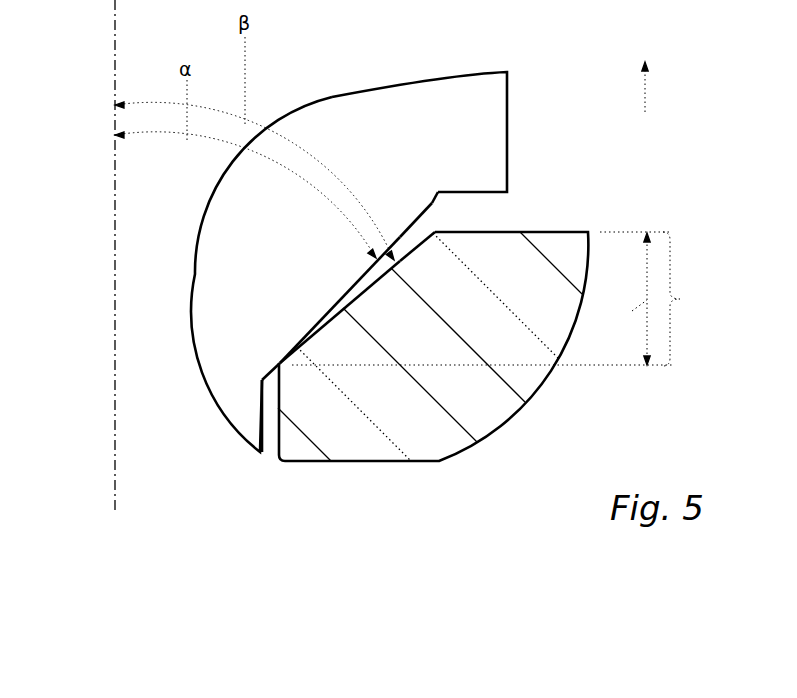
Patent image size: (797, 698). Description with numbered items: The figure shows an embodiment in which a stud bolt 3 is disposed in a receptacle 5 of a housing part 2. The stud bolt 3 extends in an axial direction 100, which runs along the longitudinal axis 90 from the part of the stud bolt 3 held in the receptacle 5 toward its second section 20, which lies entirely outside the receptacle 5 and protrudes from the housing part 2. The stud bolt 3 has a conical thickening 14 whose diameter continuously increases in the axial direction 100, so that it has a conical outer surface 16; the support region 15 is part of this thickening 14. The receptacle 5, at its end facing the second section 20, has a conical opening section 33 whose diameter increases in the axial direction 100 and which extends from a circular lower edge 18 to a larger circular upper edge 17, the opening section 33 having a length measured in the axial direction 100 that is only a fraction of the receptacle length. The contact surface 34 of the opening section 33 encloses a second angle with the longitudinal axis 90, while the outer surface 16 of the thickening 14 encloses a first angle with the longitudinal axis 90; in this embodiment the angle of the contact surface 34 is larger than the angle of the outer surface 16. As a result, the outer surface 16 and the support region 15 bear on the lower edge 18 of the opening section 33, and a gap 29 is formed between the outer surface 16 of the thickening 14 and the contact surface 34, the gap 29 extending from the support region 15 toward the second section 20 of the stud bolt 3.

The housing part 2 is at (430, 428).
The stud bolt 3 is at (233, 292).
The receptacle 5 is at (276, 400).
The thickening 14 is at (342, 287).
The support region 15 is at (280, 365).
The outer surface 16 is at (388, 250).
The upper edge 17 is at (424, 230).
The lower edge 18 is at (280, 363).
The second section 20 is at (497, 97).
The gap 29 is at (442, 217).
The opening section 33 is at (500, 299).
The contact surface 34 is at (412, 243).
The longitudinal axis 90 is at (113, 47).
The axial direction 100 is at (647, 100).